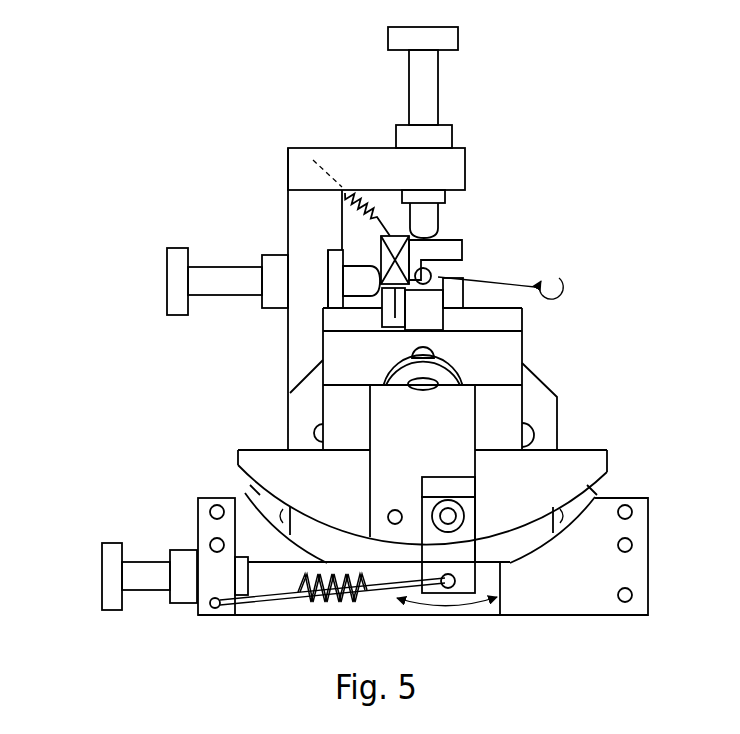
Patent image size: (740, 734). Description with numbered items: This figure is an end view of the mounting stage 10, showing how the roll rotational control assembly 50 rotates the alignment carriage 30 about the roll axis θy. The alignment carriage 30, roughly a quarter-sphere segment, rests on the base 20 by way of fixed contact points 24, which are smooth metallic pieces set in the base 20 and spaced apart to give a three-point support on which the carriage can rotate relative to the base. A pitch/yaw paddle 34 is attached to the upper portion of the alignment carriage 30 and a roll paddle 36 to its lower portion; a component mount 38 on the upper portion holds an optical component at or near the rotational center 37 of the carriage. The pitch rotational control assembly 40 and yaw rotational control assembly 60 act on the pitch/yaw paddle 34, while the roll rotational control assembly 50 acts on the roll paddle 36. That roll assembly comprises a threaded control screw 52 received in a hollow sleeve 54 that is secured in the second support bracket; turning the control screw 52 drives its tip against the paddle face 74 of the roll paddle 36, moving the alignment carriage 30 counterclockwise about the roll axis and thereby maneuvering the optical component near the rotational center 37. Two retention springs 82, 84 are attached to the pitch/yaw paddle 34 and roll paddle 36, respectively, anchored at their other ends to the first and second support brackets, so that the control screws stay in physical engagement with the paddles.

The mounting stage 10 is at (178, 198).
The base 20 is at (273, 408).
The fixed contact points 24 is at (250, 490).
The alignment carriage 30 is at (543, 410).
The pitch/yaw paddle 34 is at (452, 242).
The roll paddle 36 is at (490, 548).
The rotational center 37 is at (428, 272).
The component mount 38 is at (390, 257).
The pitch rotational control assembly 40 is at (473, 88).
The roll rotational control assembly 50 is at (140, 614).
The control screw 52 is at (110, 573).
The hollow sleeve 54 is at (183, 556).
The yaw rotational control assembly 60 is at (160, 283).
The paddle face 74 is at (412, 543).
The retention spring 82 is at (372, 193).
The retention spring 84 is at (322, 603).